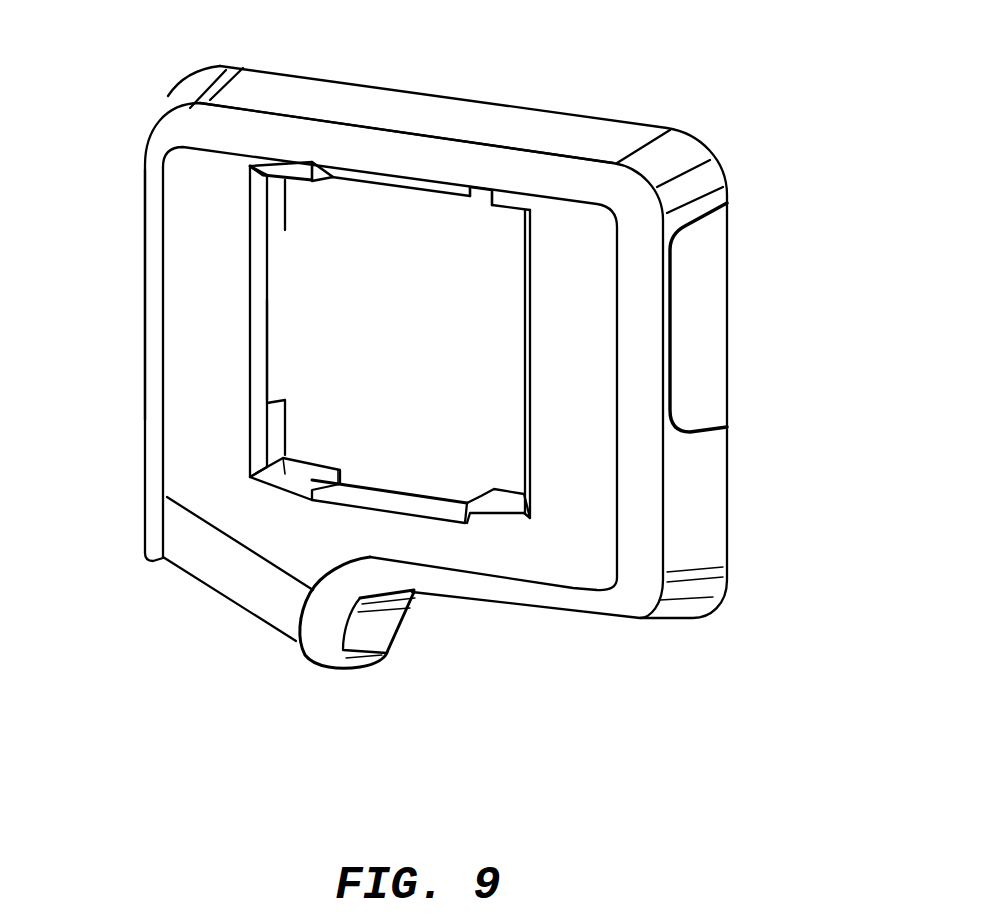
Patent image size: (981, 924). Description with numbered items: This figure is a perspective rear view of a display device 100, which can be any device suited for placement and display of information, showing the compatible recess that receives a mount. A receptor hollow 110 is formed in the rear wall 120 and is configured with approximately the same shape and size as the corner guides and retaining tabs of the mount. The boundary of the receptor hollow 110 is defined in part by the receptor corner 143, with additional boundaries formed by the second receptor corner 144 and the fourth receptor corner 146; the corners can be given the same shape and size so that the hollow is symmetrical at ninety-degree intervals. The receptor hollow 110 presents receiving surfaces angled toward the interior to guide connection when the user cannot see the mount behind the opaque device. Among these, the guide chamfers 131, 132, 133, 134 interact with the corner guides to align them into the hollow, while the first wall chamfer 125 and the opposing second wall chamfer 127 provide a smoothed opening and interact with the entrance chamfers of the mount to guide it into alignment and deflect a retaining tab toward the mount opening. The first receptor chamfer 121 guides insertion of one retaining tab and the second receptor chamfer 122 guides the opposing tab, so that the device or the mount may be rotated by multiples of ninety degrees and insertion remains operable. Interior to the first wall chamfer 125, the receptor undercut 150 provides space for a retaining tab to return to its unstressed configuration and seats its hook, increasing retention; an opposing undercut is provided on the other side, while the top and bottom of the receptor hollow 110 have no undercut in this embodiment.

The display device 100 is at (566, 128).
The receptor hollow 110 is at (431, 441).
The rear wall 120 is at (578, 533).
The first receptor chamfer 121 is at (350, 497).
The second receptor chamfer 122 is at (398, 182).
The first wall chamfer 125 is at (258, 272).
The second wall chamfer 127 is at (528, 352).
The guide chamfer 131 is at (292, 180).
The guide chamfer 132 is at (485, 205).
The guide chamfer 133 is at (513, 512).
The guide chamfer 134 is at (297, 470).
The receptor corner 143 is at (500, 497).
The second receptor corner 144 is at (277, 477).
The fourth receptor corner 146 is at (278, 200).
The receptor undercut 150 is at (273, 333).